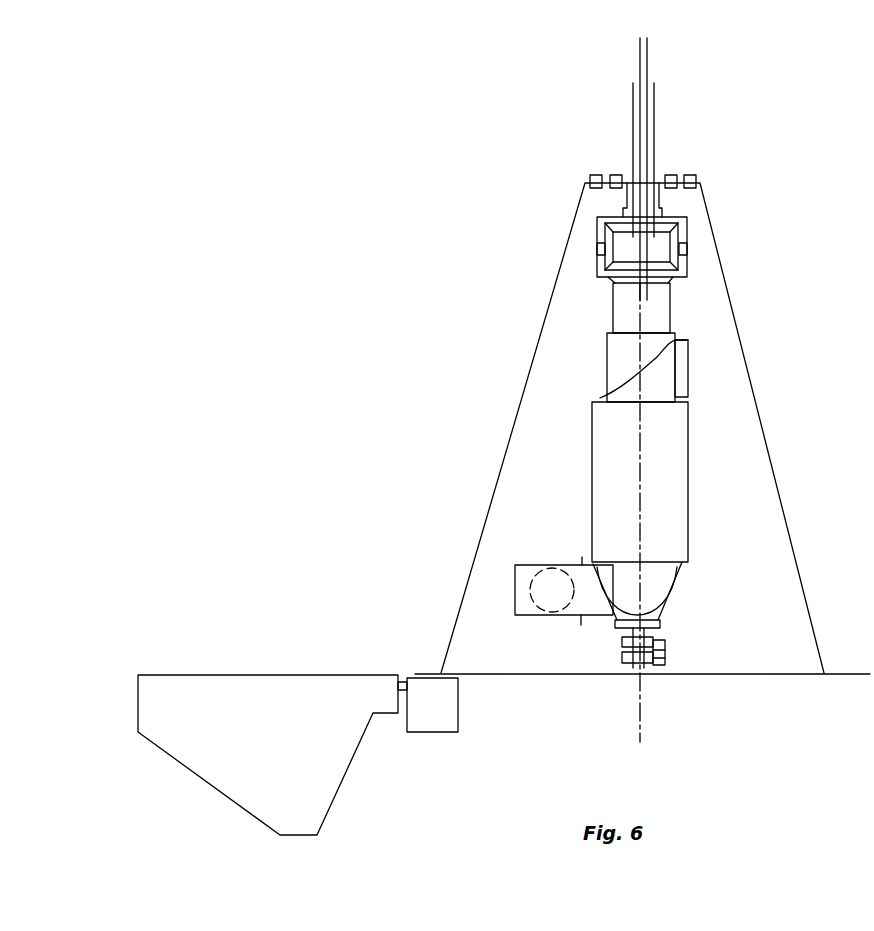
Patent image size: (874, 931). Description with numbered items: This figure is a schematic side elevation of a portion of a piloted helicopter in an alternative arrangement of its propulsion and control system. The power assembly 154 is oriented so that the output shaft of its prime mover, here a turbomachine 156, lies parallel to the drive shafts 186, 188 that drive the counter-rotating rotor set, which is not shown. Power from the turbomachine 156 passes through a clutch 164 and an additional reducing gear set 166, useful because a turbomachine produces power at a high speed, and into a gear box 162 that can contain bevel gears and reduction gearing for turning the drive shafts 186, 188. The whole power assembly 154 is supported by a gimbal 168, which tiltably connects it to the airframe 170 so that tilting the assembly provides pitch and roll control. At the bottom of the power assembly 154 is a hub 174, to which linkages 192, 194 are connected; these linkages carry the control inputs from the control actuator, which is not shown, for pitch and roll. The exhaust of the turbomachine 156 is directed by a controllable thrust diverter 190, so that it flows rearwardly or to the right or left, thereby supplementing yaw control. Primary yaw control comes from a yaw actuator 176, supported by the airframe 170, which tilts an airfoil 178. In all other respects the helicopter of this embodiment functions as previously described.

The power assembly 154 is at (580, 470).
The turbomachine 156 is at (592, 445).
The gear box 162 is at (596, 272).
The clutch 164 is at (670, 292).
The reducing gear set 166 is at (605, 367).
The gimbal 168 is at (683, 167).
The airframe 170 is at (718, 245).
The hub 174 is at (627, 632).
The yaw actuator 176 is at (458, 708).
The airfoil 178 is at (350, 770).
The drive shaft 186 is at (648, 57).
The drive shaft 188 is at (657, 97).
The thrust diverter 190 is at (555, 565).
The linkage 192 is at (662, 638).
The linkage 194 is at (653, 665).